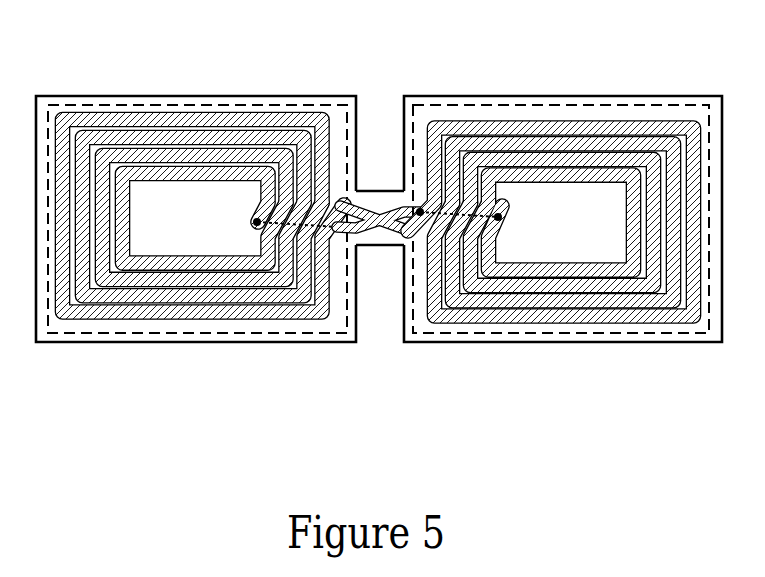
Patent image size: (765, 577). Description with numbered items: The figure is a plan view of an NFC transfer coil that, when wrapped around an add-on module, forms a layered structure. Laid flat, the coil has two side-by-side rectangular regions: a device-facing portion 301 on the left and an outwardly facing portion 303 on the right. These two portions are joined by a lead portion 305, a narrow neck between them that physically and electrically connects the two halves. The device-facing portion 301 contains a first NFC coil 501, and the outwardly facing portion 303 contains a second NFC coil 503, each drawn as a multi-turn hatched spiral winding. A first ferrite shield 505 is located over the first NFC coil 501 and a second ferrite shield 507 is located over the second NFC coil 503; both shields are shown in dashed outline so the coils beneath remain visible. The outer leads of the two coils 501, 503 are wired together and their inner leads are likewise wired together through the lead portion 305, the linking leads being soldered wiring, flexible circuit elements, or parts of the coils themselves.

The device-facing portion 301 is at (33, 92).
The outwardly facing portion 303 is at (402, 92).
The lead portion 305 is at (380, 252).
The first NFC coil 501 is at (80, 317).
The second NFC coil 503 is at (446, 322).
The first ferrite shield 505 is at (156, 326).
The second ferrite shield 507 is at (524, 328).